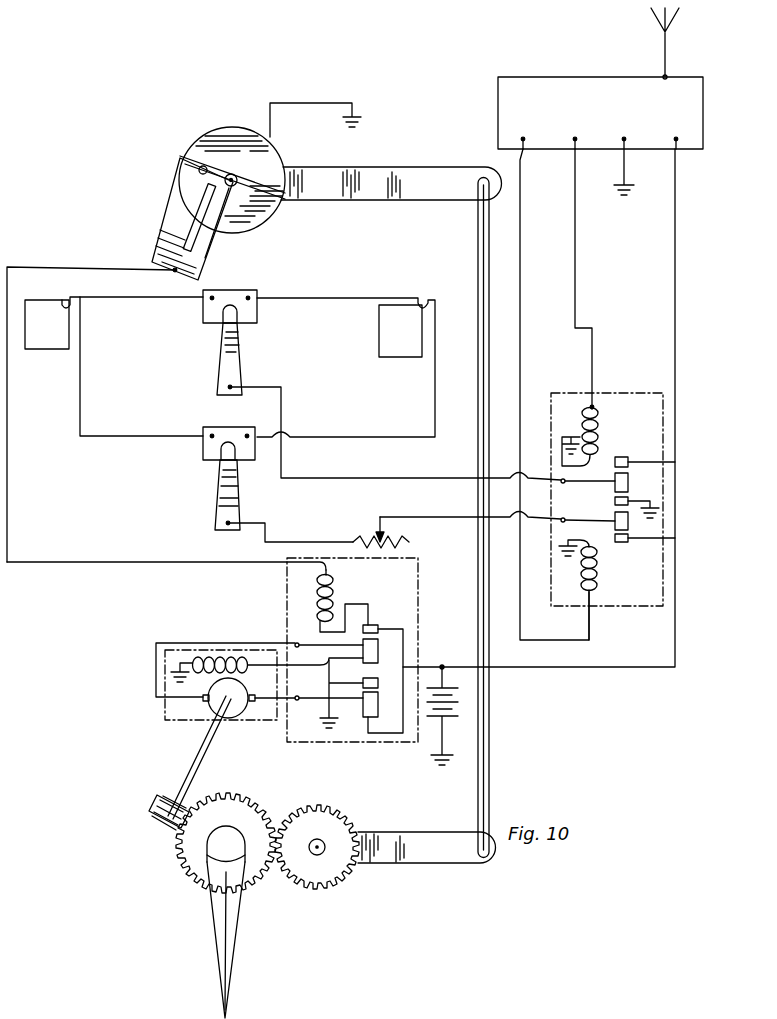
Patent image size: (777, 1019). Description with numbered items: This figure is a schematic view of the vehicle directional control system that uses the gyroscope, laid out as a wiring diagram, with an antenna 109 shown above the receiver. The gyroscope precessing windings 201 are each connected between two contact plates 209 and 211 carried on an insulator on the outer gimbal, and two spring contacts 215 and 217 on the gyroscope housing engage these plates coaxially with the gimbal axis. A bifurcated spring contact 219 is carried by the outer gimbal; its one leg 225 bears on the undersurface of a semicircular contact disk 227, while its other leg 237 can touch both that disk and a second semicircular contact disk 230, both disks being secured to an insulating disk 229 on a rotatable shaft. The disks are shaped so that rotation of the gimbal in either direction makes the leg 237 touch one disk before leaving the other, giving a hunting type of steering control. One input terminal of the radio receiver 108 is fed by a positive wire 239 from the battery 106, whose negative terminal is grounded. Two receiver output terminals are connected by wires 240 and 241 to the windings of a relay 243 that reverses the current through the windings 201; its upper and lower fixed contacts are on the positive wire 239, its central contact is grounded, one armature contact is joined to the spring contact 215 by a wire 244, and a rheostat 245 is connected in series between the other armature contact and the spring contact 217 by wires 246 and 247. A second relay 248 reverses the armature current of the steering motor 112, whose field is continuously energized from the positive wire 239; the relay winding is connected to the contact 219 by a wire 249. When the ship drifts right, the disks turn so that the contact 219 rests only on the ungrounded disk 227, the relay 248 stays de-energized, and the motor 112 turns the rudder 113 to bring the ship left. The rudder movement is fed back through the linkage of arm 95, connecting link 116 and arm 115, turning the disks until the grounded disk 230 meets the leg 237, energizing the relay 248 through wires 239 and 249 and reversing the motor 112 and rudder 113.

The arm 95 is at (392, 173).
The battery 106 is at (452, 708).
The radio receiver 108 is at (566, 90).
The antenna 109 is at (668, 53).
The steering motor 112 is at (212, 703).
The rudder 113 is at (231, 924).
The arm 115 is at (418, 848).
The connecting link 116 is at (489, 742).
The windings 201 is at (53, 336).
The contact plate 209 is at (250, 289).
The contact plate 211 is at (212, 446).
The spring contact 215 is at (243, 362).
The spring contact 217 is at (223, 483).
The bifurcated spring contact 219 is at (150, 265).
The leg 225 is at (240, 222).
The contact disk 227 is at (183, 175).
The insulating disk 229 is at (183, 157).
The contact disk 230 is at (232, 128).
The leg 237 is at (182, 213).
The positive wire 239 is at (604, 670).
The wire 240 is at (521, 190).
The wire 241 is at (574, 297).
The relay 243 is at (593, 442).
The wire 244 is at (425, 477).
The rheostat 245 is at (370, 547).
The wire 246 is at (463, 521).
The wire 247 is at (325, 541).
The relay 248 is at (380, 651).
The wire 249 is at (160, 563).